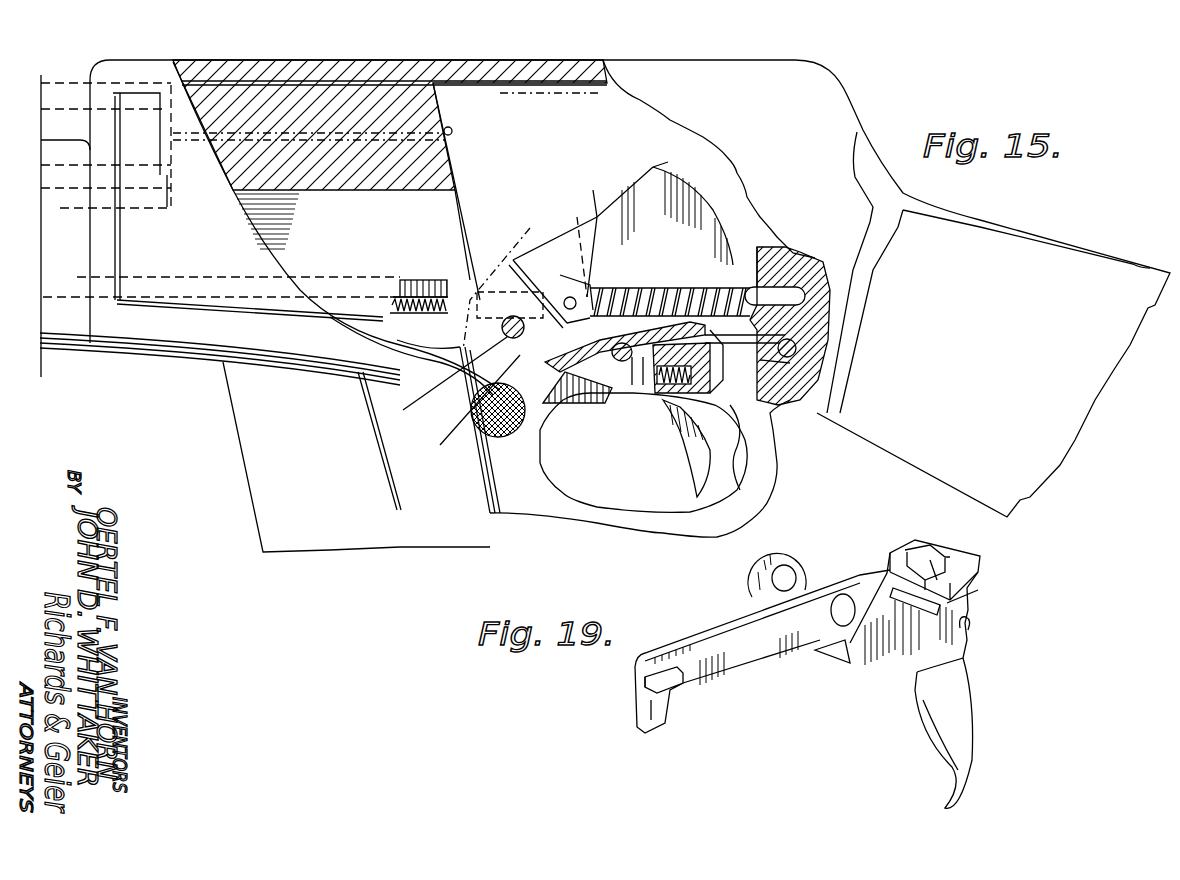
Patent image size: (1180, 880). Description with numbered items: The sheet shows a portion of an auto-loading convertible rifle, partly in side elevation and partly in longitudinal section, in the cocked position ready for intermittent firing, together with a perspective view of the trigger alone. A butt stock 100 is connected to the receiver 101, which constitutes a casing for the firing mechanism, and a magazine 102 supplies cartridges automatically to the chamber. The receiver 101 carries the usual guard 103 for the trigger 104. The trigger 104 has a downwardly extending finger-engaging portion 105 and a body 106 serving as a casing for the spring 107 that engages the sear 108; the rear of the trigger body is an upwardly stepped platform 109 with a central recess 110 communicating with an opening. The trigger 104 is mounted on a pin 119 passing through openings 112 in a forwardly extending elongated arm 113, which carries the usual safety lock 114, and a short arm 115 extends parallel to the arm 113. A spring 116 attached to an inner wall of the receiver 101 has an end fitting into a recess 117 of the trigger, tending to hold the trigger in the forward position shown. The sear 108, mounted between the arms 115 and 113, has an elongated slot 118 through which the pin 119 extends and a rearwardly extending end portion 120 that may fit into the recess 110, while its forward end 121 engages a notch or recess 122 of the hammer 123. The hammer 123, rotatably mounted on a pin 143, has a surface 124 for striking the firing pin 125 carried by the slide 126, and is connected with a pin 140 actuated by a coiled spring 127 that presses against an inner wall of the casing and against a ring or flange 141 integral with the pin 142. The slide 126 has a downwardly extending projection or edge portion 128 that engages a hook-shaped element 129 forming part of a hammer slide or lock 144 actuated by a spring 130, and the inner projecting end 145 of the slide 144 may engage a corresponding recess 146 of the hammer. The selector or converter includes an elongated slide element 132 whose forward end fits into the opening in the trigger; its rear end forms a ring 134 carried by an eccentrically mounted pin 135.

In FIG. 15, the butt stock 100 is at (1078, 392).
In FIG. 15, the receiver 101 is at (592, 72).
In FIG. 15, the magazine 102 is at (351, 530).
In FIG. 15, the guard 103 is at (615, 520).
In FIG. 15, the trigger 104 is at (697, 427).
In FIG. 19, the trigger 104 is at (960, 655).
In FIG. 15, the finger-engaging portion 105 is at (690, 480).
In FIG. 19, the finger-engaging portion 105 is at (975, 750).
In FIG. 19, the body 106 is at (877, 660).
In FIG. 15, the spring 107 is at (680, 390).
In FIG. 15, the sear 108 is at (637, 380).
In FIG. 15, the upwardly stepped platform 109 is at (780, 365).
In FIG. 19, the upwardly stepped platform 109 is at (967, 588).
In FIG. 19, the central recess 110 is at (920, 567).
In FIG. 19, the openings 112 is at (845, 594).
In FIG. 19, the elongated arm 113 is at (715, 625).
In FIG. 19, the safety lock 114 is at (657, 703).
In FIG. 19, the short arm 115 is at (790, 562).
In FIG. 15, the spring 116 is at (780, 430).
In FIG. 19, the recess 117 is at (973, 625).
In FIG. 15, the elongated slot 118 is at (640, 387).
In FIG. 15, the pin 119 is at (620, 362).
In FIG. 15, the rearwardly extending end portion 120 is at (700, 262).
In FIG. 15, the forward end 121 is at (547, 397).
In FIG. 15, the notch or recess 122 is at (467, 414).
In FIG. 15, the hammer 123 is at (660, 165).
In FIG. 15, the surface 124 is at (630, 185).
In FIG. 15, the firing pin 125 is at (452, 127).
In FIG. 15, the slide 126 is at (447, 167).
In FIG. 15, the coiled spring 127 is at (610, 287).
In FIG. 15, the projection or edge portion 128 is at (470, 280).
In FIG. 15, the hook-shaped element 129 is at (450, 273).
In FIG. 15, the spring 130 is at (405, 282).
In FIG. 15, the slide element 132 is at (773, 337).
In FIG. 15, the ring 134 is at (800, 352).
In FIG. 15, the pin 135 is at (790, 357).
In FIG. 15, the pin 140 is at (657, 287).
In FIG. 15, the ring or flange 141 is at (573, 222).
In FIG. 15, the pin 142 is at (560, 290).
In FIG. 15, the pin 143 is at (449, 385).
In FIG. 15, the hammer slide or lock 144 is at (502, 279).
In FIG. 15, the inner projecting end 145 is at (440, 340).
In FIG. 15, the recess 146 is at (535, 335).